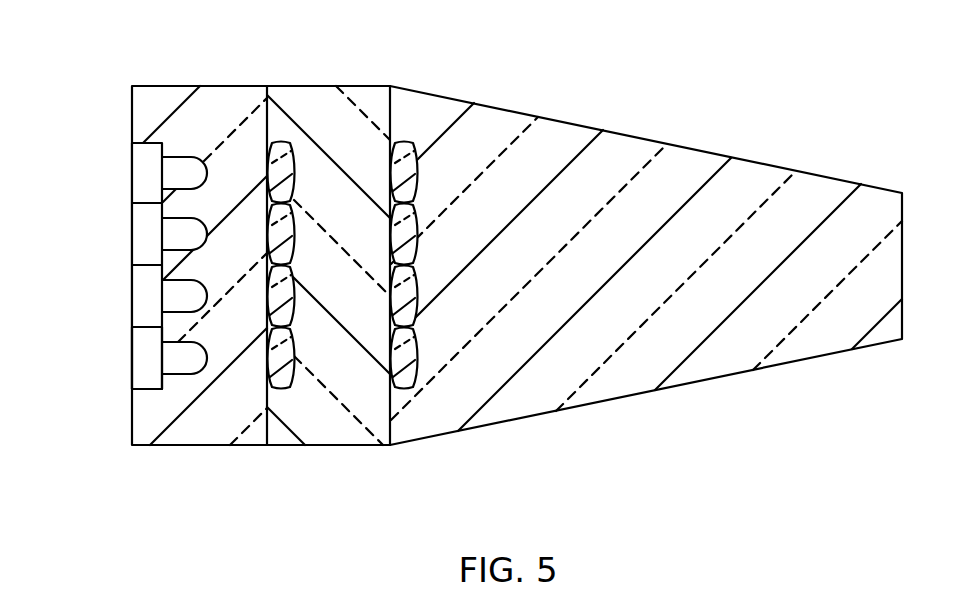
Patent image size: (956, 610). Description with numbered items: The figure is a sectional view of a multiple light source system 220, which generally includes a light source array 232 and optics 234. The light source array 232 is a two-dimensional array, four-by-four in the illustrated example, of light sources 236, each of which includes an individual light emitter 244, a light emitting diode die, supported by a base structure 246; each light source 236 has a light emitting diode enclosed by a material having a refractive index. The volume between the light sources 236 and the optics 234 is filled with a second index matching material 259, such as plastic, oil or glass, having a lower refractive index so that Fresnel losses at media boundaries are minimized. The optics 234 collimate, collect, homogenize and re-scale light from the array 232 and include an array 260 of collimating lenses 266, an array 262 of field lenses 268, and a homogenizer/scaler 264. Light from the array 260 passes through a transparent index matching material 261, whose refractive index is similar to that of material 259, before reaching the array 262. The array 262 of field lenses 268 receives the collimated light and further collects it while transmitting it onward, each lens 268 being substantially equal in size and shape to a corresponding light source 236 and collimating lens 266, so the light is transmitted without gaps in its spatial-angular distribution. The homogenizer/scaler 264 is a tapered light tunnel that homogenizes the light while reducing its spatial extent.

The multiple light source system 220 is at (492, 272).
The light source array 232 is at (145, 400).
The optics 234 is at (646, 266).
The light source 236 is at (122, 279).
The light emitter 244 is at (183, 368).
The base structure 246 is at (139, 365).
The second index matching material 259 is at (220, 107).
The array of collimating lenses 260 is at (289, 384).
The index matching material 261 is at (352, 433).
The array of field lenses 262 is at (401, 402).
The homogenizer/scaler 264 is at (718, 360).
The collimating lens 266 is at (309, 274).
The field lens 268 is at (466, 309).